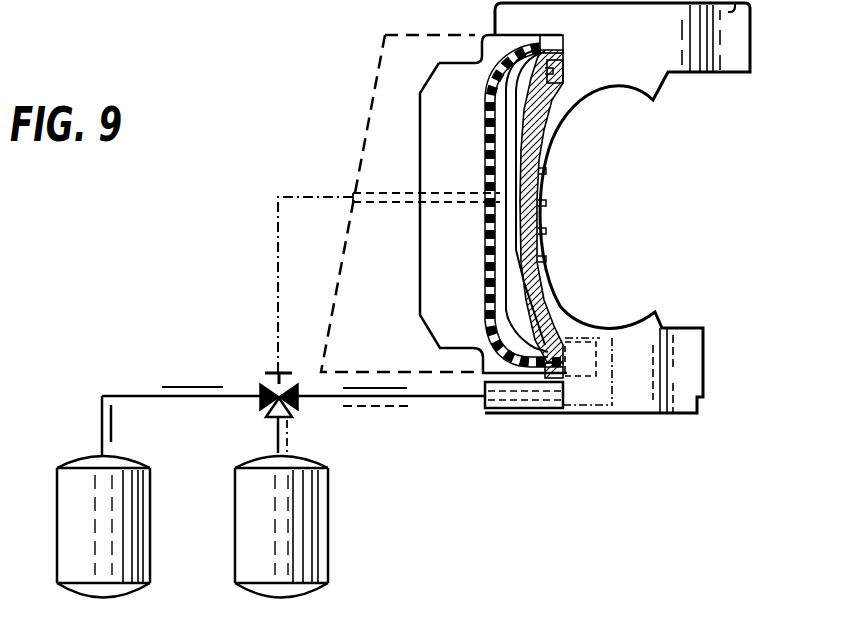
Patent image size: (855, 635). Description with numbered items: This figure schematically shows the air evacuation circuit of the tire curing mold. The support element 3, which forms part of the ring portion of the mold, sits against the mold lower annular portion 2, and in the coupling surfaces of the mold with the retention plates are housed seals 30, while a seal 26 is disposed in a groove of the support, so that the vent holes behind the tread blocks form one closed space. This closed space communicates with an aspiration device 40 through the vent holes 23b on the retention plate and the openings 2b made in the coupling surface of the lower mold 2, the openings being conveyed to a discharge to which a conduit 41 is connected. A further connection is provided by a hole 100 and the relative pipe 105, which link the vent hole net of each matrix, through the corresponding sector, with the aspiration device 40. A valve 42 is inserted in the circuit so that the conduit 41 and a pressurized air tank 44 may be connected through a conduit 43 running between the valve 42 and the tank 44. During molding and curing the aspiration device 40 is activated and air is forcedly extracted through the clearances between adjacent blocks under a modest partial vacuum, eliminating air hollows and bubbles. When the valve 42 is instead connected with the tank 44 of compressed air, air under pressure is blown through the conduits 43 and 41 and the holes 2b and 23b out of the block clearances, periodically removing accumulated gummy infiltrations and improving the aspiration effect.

The mold lower annular portion 2 is at (673, 342).
The openings for vents of air 2b is at (603, 346).
The support element 3 is at (420, 248).
The vent holes 23b is at (556, 360).
The seal 26 is at (487, 184).
The seals 30 is at (565, 47).
The aspiration device 40 is at (152, 540).
The conduit 41 is at (427, 398).
The valve 42 is at (266, 384).
The conduit 43 is at (276, 437).
The pressurized air tank 44 is at (328, 543).
The hole 100 is at (366, 188).
The pipe 105 is at (278, 255).